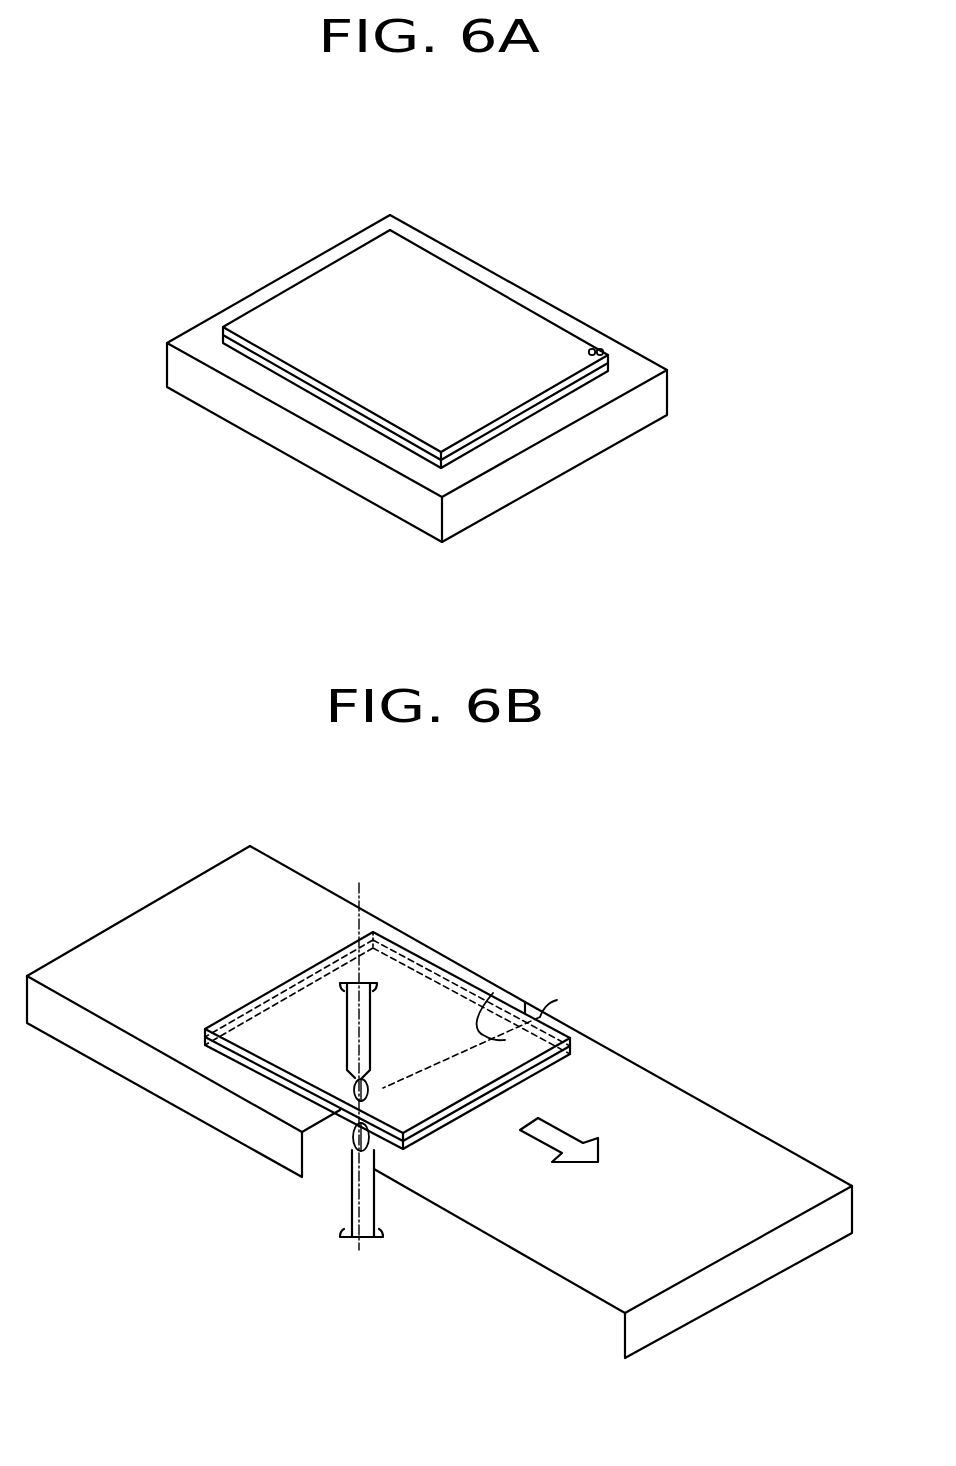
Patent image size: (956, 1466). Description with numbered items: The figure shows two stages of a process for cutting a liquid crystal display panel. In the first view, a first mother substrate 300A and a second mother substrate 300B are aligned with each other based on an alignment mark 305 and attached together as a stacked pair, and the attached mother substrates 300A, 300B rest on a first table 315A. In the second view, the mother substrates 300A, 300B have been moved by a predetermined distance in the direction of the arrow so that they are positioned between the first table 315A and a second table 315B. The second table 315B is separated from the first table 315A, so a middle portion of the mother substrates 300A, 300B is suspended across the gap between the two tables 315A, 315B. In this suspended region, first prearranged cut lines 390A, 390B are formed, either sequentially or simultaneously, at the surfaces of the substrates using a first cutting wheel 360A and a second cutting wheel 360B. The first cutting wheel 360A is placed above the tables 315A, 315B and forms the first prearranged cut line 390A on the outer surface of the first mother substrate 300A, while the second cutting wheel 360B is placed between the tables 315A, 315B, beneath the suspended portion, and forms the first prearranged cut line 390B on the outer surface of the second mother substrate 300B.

In FIG. 6A, the first mother substrate 300A is at (222, 328).
In FIG. 6B, the first mother substrate 300A is at (206, 1033).
In FIG. 6A, the second mother substrate 300B is at (222, 340).
In FIG. 6B, the second mother substrate 300B is at (207, 1044).
In FIG. 6A, the alignment mark 305 is at (601, 349).
In FIG. 6A, the first table 315A is at (403, 506).
In FIG. 6B, the first table 315A is at (230, 1115).
In FIG. 6B, the second table 315B is at (503, 1272).
In FIG. 6B, the first cutting wheel 360A is at (373, 1005).
In FIG. 6B, the second cutting wheel 360B is at (350, 1212).
In FIG. 6B, the first prearranged cut line 390A is at (493, 993).
In FIG. 6B, the first prearranged cut line 390B is at (557, 1000).